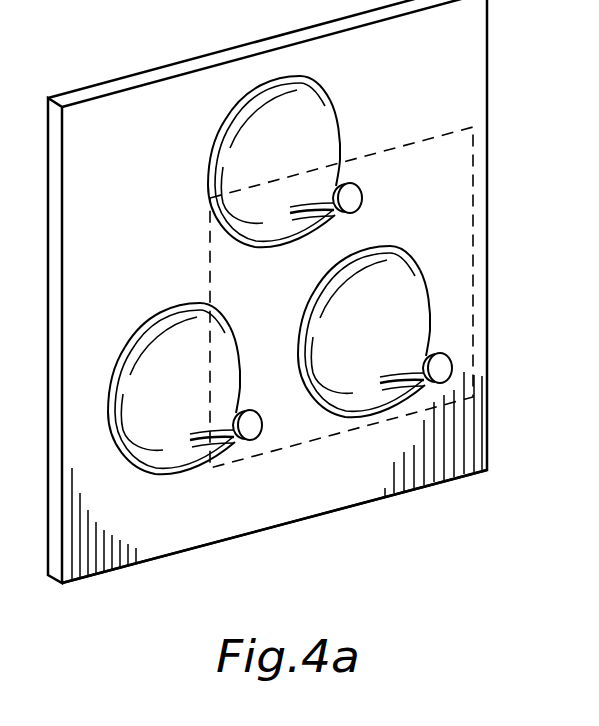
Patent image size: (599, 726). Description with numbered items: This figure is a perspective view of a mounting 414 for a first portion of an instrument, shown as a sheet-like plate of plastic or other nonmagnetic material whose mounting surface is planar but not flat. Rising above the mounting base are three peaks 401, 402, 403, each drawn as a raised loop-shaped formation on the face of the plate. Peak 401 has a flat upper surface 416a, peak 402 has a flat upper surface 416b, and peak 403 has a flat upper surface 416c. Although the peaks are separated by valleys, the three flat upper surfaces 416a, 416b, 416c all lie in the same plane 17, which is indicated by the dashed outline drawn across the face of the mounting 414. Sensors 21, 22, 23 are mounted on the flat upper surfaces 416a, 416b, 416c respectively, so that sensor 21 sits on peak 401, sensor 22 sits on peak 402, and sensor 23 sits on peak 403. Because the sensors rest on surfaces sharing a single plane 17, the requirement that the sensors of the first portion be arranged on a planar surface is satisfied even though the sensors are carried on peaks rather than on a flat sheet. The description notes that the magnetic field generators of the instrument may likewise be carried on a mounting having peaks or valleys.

The plane 17 is at (489, 194).
The sensor 21 is at (363, 193).
The sensor 22 is at (438, 392).
The sensor 23 is at (253, 443).
The peak 401 is at (336, 112).
The peak 402 is at (428, 310).
The peak 403 is at (172, 330).
The mounting 414 is at (201, 550).
The flat upper surface 416a is at (313, 222).
The flat upper surface 416b is at (446, 353).
The flat upper surface 416c is at (222, 445).